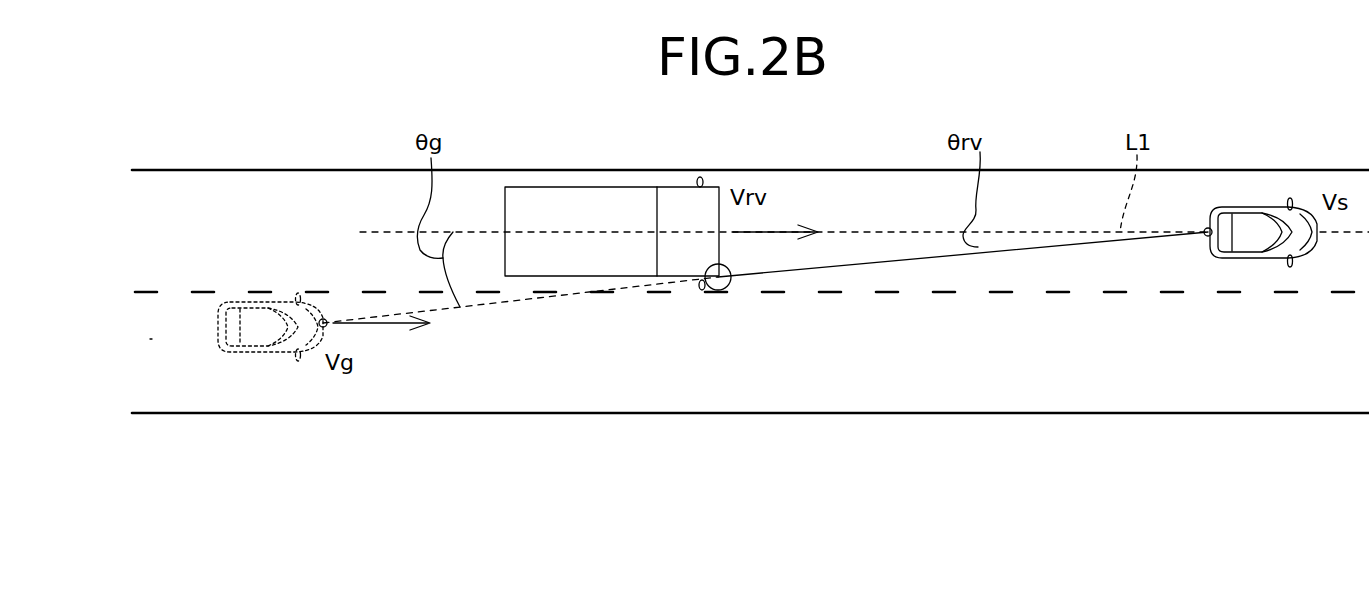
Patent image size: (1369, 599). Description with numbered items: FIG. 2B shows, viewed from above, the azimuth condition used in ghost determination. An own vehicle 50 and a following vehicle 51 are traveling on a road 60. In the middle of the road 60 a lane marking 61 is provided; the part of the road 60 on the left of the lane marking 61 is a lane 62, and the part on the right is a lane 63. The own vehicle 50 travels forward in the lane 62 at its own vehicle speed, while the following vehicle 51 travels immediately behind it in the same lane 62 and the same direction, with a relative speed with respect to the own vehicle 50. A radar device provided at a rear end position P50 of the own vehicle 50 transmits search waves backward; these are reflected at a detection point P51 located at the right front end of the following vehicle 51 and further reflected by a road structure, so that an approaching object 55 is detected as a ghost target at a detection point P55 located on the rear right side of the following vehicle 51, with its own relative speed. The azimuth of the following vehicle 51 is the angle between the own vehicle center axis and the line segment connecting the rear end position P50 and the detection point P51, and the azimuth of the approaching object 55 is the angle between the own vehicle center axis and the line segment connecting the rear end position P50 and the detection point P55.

The own vehicle 50 is at (1233, 207).
The following vehicle 51 is at (527, 190).
The approaching object 55 is at (236, 354).
The road 60 is at (168, 414).
The lane marking 61 is at (150, 292).
The lane 62 is at (150, 226).
The lane 63 is at (150, 339).
The rear end position P50 is at (1205, 240).
The detection point P51 is at (735, 290).
The detection point P55 is at (327, 326).